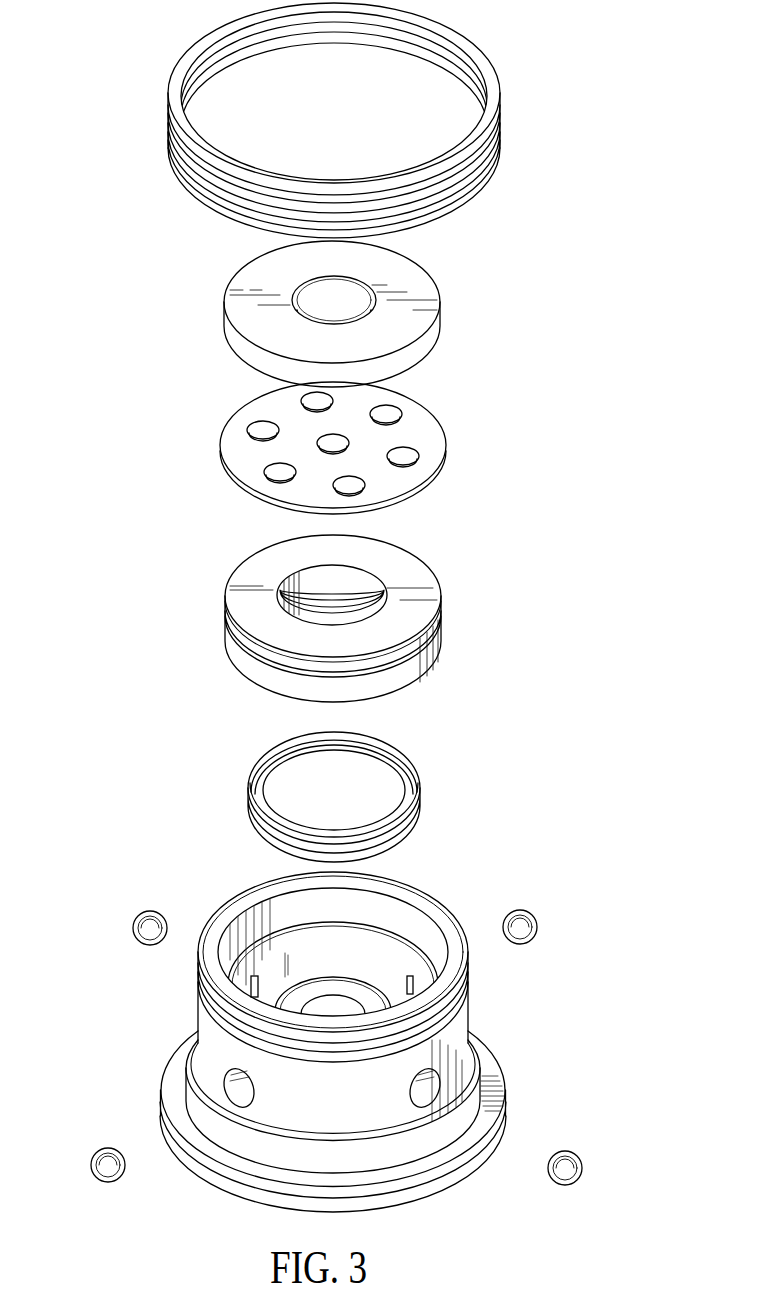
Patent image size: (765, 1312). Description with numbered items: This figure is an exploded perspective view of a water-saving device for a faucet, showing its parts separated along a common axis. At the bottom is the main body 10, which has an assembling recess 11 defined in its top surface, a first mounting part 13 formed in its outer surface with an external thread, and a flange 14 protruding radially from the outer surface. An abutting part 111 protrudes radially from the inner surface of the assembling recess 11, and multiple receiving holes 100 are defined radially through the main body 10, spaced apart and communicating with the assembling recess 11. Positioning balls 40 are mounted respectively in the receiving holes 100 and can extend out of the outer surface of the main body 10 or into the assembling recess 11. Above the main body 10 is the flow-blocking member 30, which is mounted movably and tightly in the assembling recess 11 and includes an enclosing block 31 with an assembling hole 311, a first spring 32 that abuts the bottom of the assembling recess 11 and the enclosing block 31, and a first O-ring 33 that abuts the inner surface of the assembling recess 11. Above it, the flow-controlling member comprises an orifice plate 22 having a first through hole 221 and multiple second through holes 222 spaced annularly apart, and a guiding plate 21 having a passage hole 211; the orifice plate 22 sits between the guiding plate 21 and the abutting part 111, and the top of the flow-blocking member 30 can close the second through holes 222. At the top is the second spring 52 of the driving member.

The main body 10 is at (361, 1044).
The receiving holes 100 is at (433, 1073).
The assembling recess 11 is at (297, 963).
The abutting part 111 is at (275, 930).
The first mounting part 13 is at (450, 990).
The flange 14 is at (492, 1092).
The guiding plate 21 is at (330, 314).
The passage hole 211 is at (308, 292).
The orifice plate 22 is at (373, 442).
The first through hole 221 is at (340, 440).
The second through holes 222 is at (410, 458).
The flow-blocking member 30 is at (342, 618).
The enclosing block 31 is at (284, 582).
The assembling hole 311 is at (302, 582).
The first spring 32 is at (403, 758).
The first O-ring 33 is at (415, 645).
The positioning balls 40 is at (565, 1167).
The second spring 52 is at (470, 50).